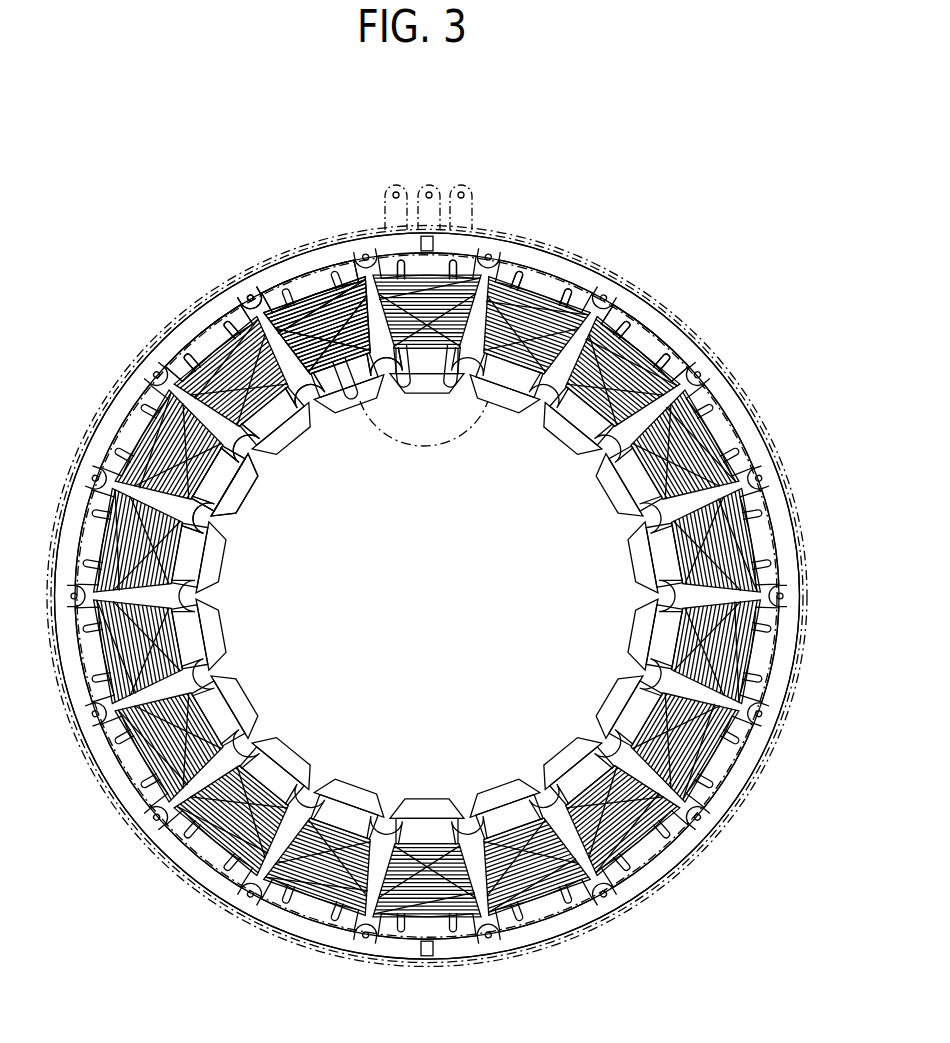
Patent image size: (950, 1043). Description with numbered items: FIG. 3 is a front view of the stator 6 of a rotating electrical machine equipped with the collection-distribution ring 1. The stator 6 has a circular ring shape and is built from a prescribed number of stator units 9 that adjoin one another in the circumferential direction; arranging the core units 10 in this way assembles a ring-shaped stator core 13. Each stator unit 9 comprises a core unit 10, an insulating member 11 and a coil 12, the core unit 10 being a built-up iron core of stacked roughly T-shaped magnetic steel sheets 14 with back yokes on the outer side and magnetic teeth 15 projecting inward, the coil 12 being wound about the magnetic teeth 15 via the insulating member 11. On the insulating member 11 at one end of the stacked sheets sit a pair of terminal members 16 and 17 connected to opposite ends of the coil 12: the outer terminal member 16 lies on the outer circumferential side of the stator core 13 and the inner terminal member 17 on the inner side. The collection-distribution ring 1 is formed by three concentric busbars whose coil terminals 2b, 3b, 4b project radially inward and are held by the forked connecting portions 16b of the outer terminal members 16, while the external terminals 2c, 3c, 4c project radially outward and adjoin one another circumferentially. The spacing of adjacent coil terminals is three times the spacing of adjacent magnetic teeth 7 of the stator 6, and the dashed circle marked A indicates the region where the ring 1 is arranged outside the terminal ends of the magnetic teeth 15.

The collection-distribution ring 1 is at (578, 253).
The coil terminal 2b is at (472, 243).
The coil terminal 3b is at (585, 283).
The coil terminal 4b is at (702, 340).
The external terminal 2c is at (462, 182).
The external terminal 3c is at (429, 182).
The external terminal 4c is at (393, 182).
The stator 6 is at (712, 213).
The magnetic teeth 7 is at (231, 303).
The stator unit 9 is at (268, 260).
The core unit 10 is at (152, 322).
The insulating member 11 is at (210, 330).
The coil 12 is at (263, 305).
The stator core 13 is at (310, 528).
The magnetic steel sheets 14 is at (155, 360).
The magnetic teeth 15 is at (253, 478).
The terminal member 16 is at (316, 288).
The connecting portion 16b is at (442, 257).
The terminal member 17 is at (352, 395).
The region A is at (466, 432).